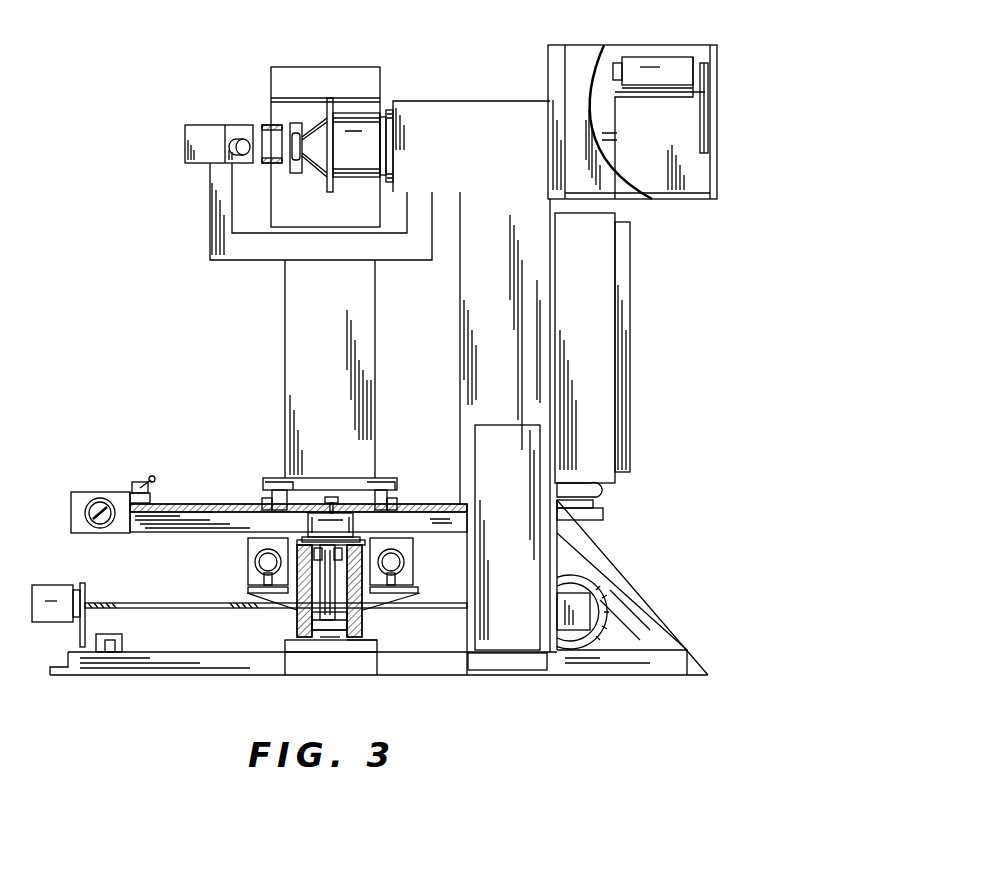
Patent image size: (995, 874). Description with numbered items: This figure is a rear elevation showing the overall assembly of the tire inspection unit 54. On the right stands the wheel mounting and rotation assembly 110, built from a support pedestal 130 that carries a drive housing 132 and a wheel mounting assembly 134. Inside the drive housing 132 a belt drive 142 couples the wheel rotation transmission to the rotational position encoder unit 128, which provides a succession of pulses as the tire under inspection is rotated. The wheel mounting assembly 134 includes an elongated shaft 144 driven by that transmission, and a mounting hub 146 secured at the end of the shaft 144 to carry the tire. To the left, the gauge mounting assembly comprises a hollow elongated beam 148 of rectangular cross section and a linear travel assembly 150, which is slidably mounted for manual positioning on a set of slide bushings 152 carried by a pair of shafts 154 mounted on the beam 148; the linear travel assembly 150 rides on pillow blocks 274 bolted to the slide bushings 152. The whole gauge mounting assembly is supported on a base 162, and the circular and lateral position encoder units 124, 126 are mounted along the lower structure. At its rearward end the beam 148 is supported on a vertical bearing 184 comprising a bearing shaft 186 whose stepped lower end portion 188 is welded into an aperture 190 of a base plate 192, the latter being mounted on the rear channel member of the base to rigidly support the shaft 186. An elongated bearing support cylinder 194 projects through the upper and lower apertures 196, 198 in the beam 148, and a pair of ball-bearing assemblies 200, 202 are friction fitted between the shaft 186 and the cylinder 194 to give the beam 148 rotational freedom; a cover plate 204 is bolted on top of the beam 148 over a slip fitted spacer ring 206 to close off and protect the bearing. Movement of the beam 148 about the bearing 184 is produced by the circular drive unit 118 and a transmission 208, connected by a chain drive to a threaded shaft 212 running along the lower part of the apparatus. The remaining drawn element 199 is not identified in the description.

The tire inspection unit 54 is at (189, 366).
The wheel mounting and rotation assembly 110 is at (476, 218).
The circular drive unit 118 is at (600, 597).
The circular position encoder unit 124 is at (72, 585).
The lateral position encoder unit 126 is at (112, 495).
The rotational position encoder unit 128 is at (647, 57).
The support pedestal 130 is at (462, 353).
The drive housing 132 is at (580, 44).
The wheel mounting assembly 134 is at (367, 137).
The belt drive 142 is at (710, 108).
The elongated shaft 144 is at (603, 137).
The mounting hub 146 is at (316, 170).
The hollow elongated beam 148 is at (364, 605).
The linear travel assembly 150 is at (205, 482).
The slide bushings 152 is at (255, 551).
The shafts 154 is at (260, 565).
The base 162 is at (397, 682).
The vertical bearing 184 is at (382, 535).
The bearing shaft 186 is at (312, 613).
The stepped lower end portion 188 is at (336, 640).
The aperture 190 is at (328, 637).
The base plate 192 is at (362, 642).
The bearing support cylinder 194 is at (310, 596).
The upper aperture 196 is at (346, 548).
The lower aperture 198 is at (352, 635).
The bushing 199 is at (298, 630).
The ball-bearing assembly 200 is at (352, 557).
The ball-bearing assembly 202 is at (350, 613).
The cover plate 204 is at (303, 540).
The spacer ring 206 is at (300, 540).
The transmission 208 is at (558, 602).
The threaded shaft 212 is at (157, 602).
The pillow blocks 274 is at (247, 540).